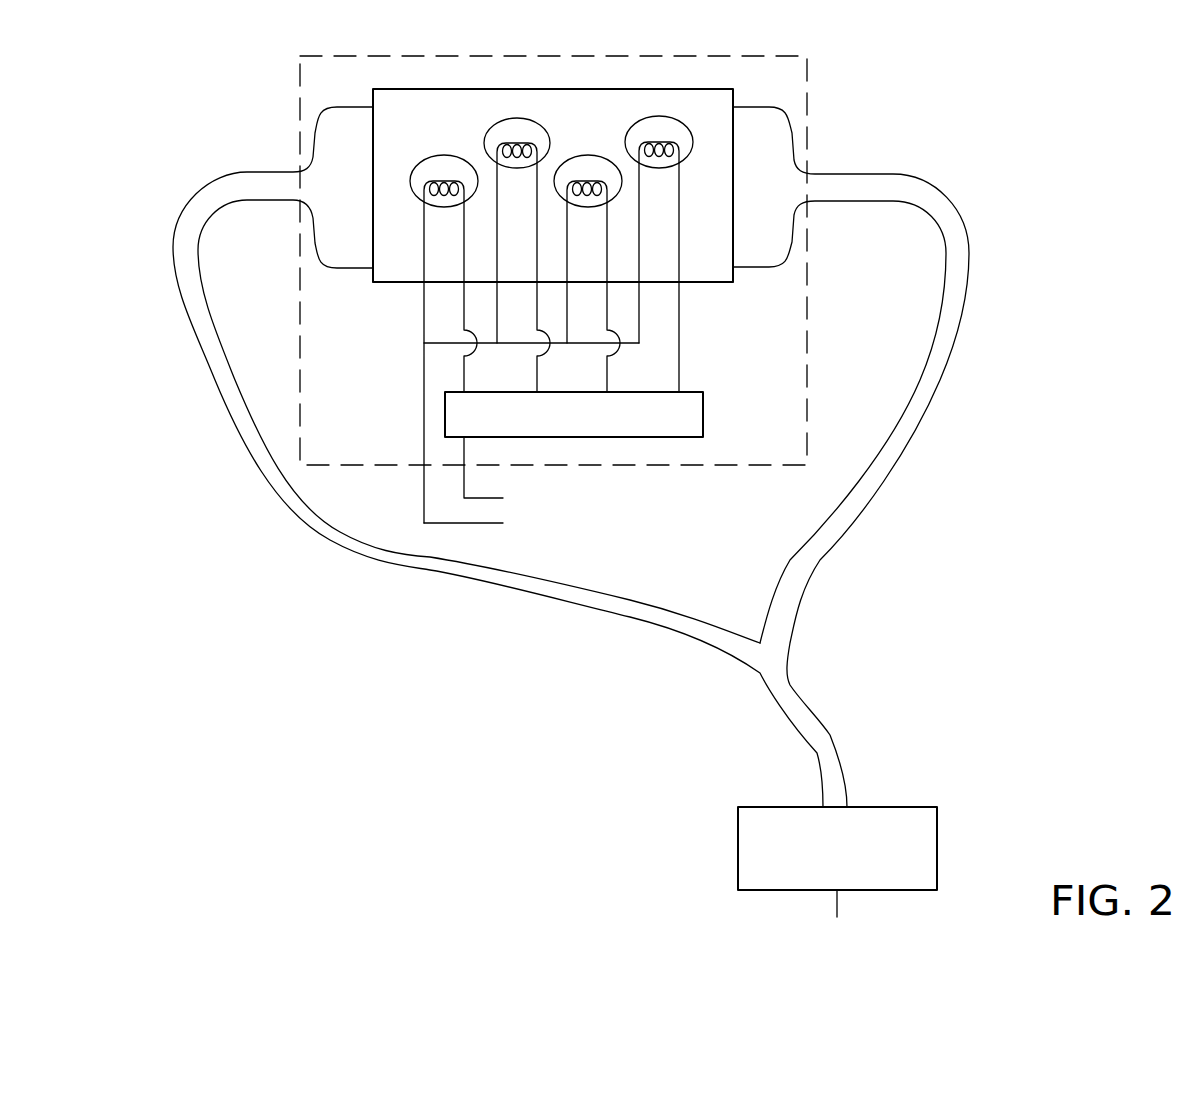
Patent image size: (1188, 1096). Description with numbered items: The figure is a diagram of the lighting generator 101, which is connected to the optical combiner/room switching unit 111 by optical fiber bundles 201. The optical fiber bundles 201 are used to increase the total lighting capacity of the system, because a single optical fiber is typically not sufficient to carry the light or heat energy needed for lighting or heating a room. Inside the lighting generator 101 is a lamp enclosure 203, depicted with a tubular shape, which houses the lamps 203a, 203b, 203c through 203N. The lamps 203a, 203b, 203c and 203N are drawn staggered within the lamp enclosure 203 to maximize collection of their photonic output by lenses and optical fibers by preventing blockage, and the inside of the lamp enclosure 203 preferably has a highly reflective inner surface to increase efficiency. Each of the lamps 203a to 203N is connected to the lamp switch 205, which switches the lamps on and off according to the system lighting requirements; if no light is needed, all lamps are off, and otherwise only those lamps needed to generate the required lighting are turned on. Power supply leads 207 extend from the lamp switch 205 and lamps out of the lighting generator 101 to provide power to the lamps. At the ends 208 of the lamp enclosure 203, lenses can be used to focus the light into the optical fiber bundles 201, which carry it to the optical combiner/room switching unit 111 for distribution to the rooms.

The lighting generator 101 is at (553, 246).
The optical fiber bundles 201 is at (255, 222).
The lamp enclosure 203 is at (553, 293).
The lamp 203a is at (444, 324).
The lamp 203b is at (517, 241).
The lamp 203c is at (588, 259).
The lamp 203N is at (659, 241).
The lamp switch 205 is at (545, 428).
The power supply leads 207 is at (503, 498).
The ends of lamp enclosure 208 is at (390, 297).
The optical combiner/room switching unit 111 is at (853, 866).